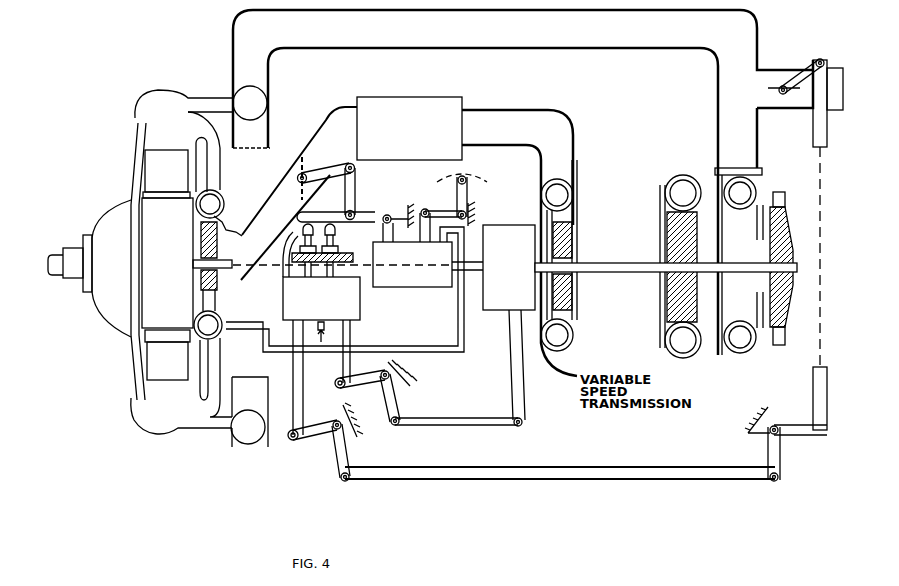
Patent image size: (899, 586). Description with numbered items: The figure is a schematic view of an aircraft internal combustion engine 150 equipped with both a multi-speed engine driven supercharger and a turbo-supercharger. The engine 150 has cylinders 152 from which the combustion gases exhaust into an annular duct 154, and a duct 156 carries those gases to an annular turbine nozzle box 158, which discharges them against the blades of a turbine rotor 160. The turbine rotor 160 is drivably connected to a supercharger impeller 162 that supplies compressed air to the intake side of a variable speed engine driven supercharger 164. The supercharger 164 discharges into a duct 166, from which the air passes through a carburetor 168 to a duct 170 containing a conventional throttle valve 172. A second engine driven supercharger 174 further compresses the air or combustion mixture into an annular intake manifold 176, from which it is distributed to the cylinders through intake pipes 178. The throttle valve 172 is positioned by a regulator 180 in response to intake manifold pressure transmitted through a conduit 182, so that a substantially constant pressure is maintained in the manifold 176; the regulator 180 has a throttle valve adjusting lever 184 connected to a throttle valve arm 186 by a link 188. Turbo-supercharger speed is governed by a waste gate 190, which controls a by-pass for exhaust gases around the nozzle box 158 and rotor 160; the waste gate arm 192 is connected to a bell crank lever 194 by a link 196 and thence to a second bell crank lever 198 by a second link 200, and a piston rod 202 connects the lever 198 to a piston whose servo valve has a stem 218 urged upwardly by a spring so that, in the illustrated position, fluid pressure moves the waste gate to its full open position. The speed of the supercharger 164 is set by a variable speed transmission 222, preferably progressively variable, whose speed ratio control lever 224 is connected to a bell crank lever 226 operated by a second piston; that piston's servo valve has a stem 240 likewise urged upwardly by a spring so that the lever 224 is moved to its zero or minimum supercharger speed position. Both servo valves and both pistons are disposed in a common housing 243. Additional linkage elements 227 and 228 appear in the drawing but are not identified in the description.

The aircraft internal combustion engine 150 is at (175, 255).
The cylinders 152 is at (160, 166).
The annular duct 154 is at (260, 97).
The duct 156 is at (628, 50).
The annular turbine nozzle box 158 is at (757, 190).
The turbine rotor 160 is at (788, 222).
The supercharger impeller 162 is at (668, 312).
The variable speed engine driven supercharger 164 is at (573, 293).
The duct 166 is at (510, 110).
The carburetor 168 is at (398, 99).
The duct 170 is at (274, 184).
The throttle valve 172 is at (310, 151).
The second engine driven supercharger 174 is at (222, 248).
The annular intake manifold 176 is at (222, 203).
The intake pipes 178 is at (212, 160).
The regulator 180 is at (408, 275).
The conduit 182 is at (268, 322).
The throttle valve adjusting lever 184 is at (316, 215).
The throttle valve arm 186 is at (317, 168).
The link 188 is at (357, 171).
The waste gate 190 is at (770, 86).
The waste gate arm 192 is at (812, 66).
The bell crank lever 194 is at (795, 442).
The link 196 is at (813, 137).
The second bell crank lever 198 is at (348, 451).
The second link 200 is at (472, 470).
The piston rod 202 is at (303, 404).
The stem 218 is at (283, 258).
The variable speed transmission 222 is at (519, 228).
The speed ratio control lever 224 is at (520, 392).
The bell crank lever 226 is at (395, 398).
The link 227 is at (460, 424).
The rod 228 is at (352, 331).
The stem 240 is at (340, 237).
The common housing 243 is at (335, 304).